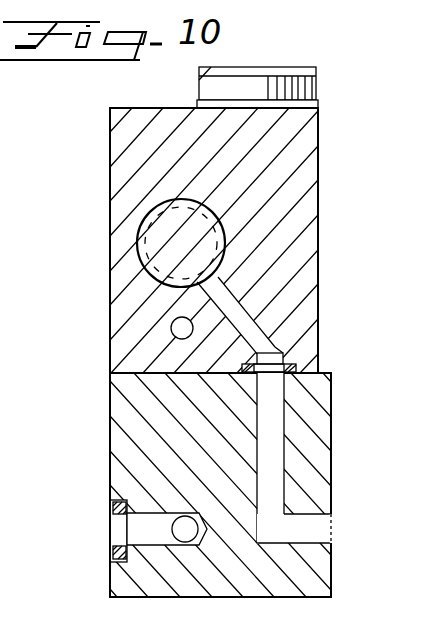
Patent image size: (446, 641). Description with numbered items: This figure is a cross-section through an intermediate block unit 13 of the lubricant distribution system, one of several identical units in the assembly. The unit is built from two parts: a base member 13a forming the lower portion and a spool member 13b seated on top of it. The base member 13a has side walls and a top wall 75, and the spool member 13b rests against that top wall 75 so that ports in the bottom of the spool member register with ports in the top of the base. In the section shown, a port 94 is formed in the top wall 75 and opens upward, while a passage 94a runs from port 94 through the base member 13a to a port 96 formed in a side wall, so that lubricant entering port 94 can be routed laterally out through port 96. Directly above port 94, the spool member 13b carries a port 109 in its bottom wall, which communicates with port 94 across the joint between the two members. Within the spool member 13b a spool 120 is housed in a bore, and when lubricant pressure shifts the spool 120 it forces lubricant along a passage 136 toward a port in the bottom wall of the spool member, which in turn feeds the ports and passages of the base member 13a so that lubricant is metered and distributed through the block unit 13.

The intermediate block unit 13 is at (342, 346).
The base member 13a is at (110, 473).
The spool member 13b is at (110, 302).
The top wall 75 is at (164, 373).
The port 94 is at (265, 378).
The passage 94a is at (303, 523).
The port 96 is at (332, 535).
The port 109 is at (288, 350).
The spool 120 is at (144, 221).
The passage 136 is at (171, 324).